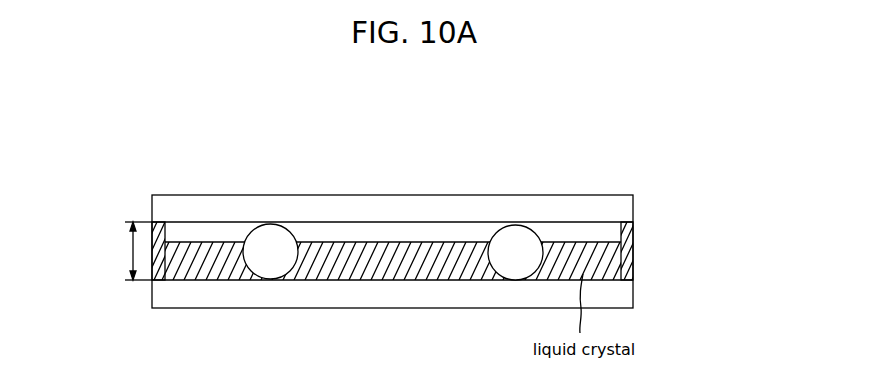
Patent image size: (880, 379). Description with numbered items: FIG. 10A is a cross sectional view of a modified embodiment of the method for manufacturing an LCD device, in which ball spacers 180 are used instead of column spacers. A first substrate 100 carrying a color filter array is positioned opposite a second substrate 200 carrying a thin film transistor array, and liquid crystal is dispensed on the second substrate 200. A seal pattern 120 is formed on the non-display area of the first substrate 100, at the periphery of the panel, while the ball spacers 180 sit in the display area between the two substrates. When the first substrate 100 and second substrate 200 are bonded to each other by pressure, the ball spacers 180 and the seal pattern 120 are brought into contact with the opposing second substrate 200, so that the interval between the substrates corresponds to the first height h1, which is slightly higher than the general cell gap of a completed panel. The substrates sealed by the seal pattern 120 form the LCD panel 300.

The first substrate 100 is at (631, 212).
The seal pattern 120 is at (631, 255).
The ball spacers 180 is at (506, 238).
The second substrate 200 is at (631, 297).
The LCD panel 300 is at (489, 167).
The first height h1 is at (123, 251).